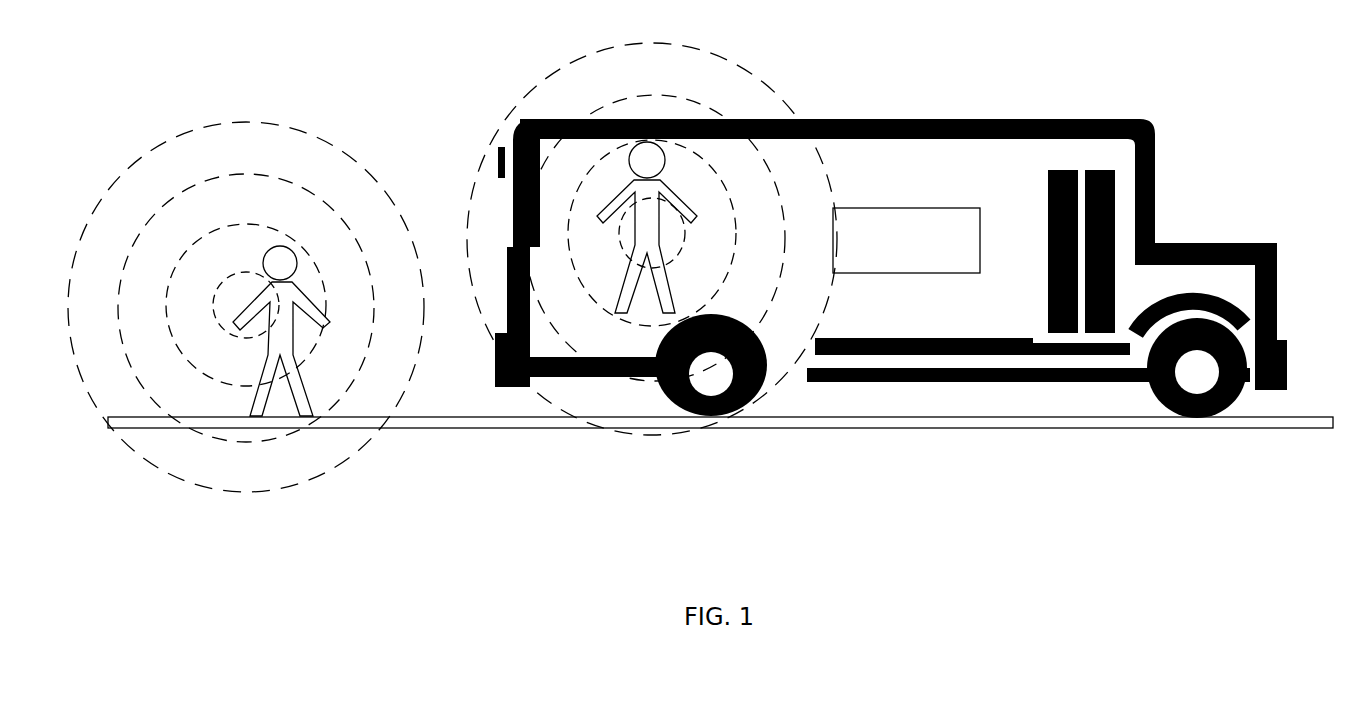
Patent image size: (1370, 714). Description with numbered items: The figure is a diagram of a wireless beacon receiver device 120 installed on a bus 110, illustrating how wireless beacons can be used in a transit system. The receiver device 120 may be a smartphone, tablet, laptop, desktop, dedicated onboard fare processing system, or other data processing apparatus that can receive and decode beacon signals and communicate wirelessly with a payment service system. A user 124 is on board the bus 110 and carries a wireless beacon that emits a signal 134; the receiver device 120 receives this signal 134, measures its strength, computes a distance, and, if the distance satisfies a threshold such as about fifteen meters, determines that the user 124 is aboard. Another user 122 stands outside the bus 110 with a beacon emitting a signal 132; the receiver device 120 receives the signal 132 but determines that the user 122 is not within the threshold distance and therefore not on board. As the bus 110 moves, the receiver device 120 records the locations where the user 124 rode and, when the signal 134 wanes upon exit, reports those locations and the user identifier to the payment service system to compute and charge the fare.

The bus 110 is at (958, 118).
The receiver device 120 is at (906, 240).
The user 122 is at (290, 325).
The user 124 is at (662, 228).
The signal 132 is at (295, 130).
The signal 134 is at (760, 80).